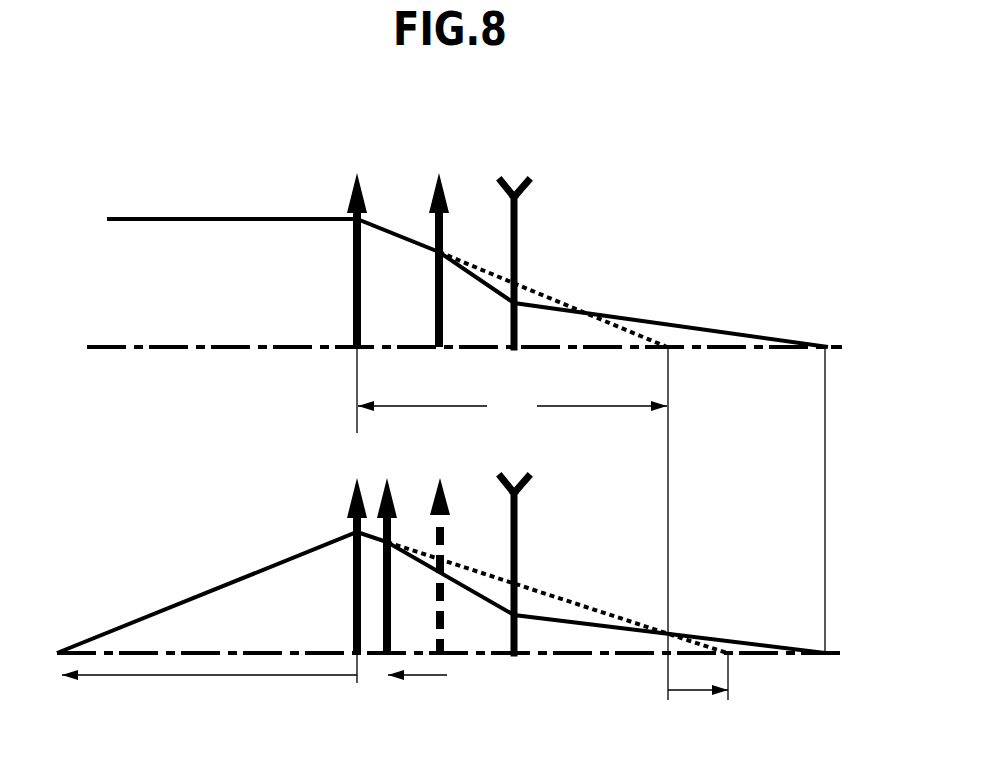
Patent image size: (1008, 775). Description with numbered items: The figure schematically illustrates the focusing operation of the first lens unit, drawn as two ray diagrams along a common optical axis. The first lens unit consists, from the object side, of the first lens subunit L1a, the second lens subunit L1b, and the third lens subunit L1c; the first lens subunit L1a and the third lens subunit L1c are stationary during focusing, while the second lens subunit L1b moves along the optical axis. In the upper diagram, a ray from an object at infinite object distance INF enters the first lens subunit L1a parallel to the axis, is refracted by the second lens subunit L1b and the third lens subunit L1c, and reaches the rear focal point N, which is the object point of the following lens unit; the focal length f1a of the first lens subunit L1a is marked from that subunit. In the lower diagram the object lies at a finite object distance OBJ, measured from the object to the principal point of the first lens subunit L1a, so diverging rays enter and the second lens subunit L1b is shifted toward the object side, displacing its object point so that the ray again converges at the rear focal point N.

The first lens subunit L1a is at (357, 398).
The second lens subunit L1b is at (413, 402).
The third lens subunit L1c is at (515, 402).
The infinite object distance INF is at (467, 269).
The rear focal point N is at (820, 477).
The focal length of the first lens subunit f1a is at (512, 408).
The object distance OBJ is at (441, 621).